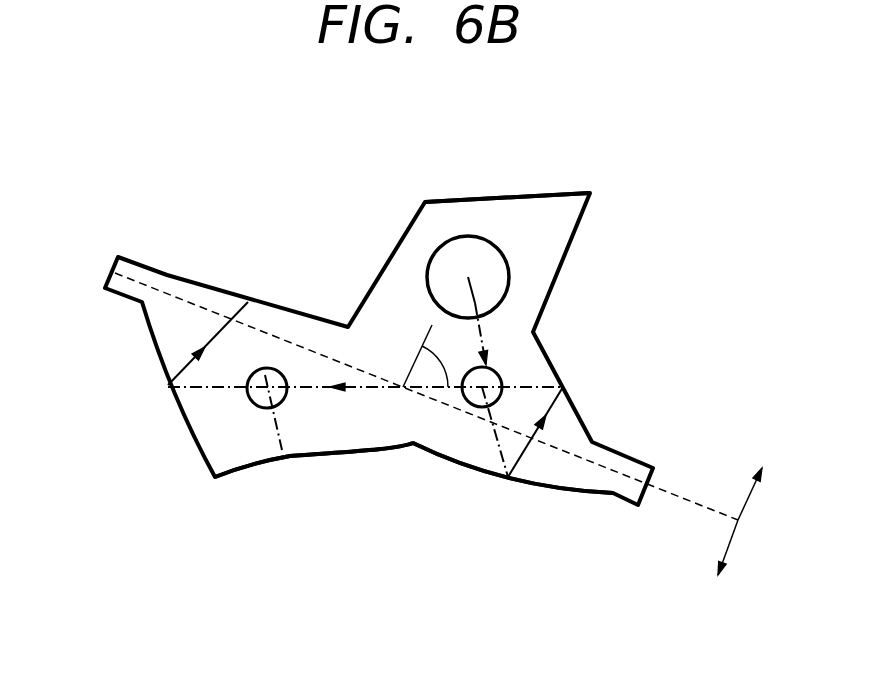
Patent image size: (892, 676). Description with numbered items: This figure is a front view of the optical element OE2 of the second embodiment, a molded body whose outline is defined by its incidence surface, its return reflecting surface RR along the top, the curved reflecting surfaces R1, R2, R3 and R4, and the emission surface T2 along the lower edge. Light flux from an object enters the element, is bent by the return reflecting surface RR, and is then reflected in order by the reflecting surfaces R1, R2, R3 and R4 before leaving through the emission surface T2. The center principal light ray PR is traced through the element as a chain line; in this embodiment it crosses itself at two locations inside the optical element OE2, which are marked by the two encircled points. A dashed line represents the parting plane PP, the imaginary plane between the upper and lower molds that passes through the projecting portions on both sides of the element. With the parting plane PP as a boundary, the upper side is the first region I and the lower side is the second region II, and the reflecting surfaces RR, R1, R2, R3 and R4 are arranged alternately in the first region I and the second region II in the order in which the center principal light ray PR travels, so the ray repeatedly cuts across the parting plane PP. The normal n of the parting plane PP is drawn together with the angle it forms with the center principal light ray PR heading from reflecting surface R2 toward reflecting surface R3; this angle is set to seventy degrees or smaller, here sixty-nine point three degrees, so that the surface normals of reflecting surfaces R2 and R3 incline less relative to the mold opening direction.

The optical element OE2 is at (623, 287).
The return reflecting surface RR is at (522, 193).
The center principal light ray PR is at (318, 387).
The emission surface T2 is at (282, 452).
The parting plane PP is at (613, 493).
The reflecting surface R1 is at (508, 477).
The reflecting surface R2 is at (563, 387).
The reflecting surface R3 is at (170, 385).
The reflecting surface R4 is at (265, 372).
The normal of the parting plane n is at (415, 353).
The first region I is at (753, 479).
The second region II is at (720, 565).